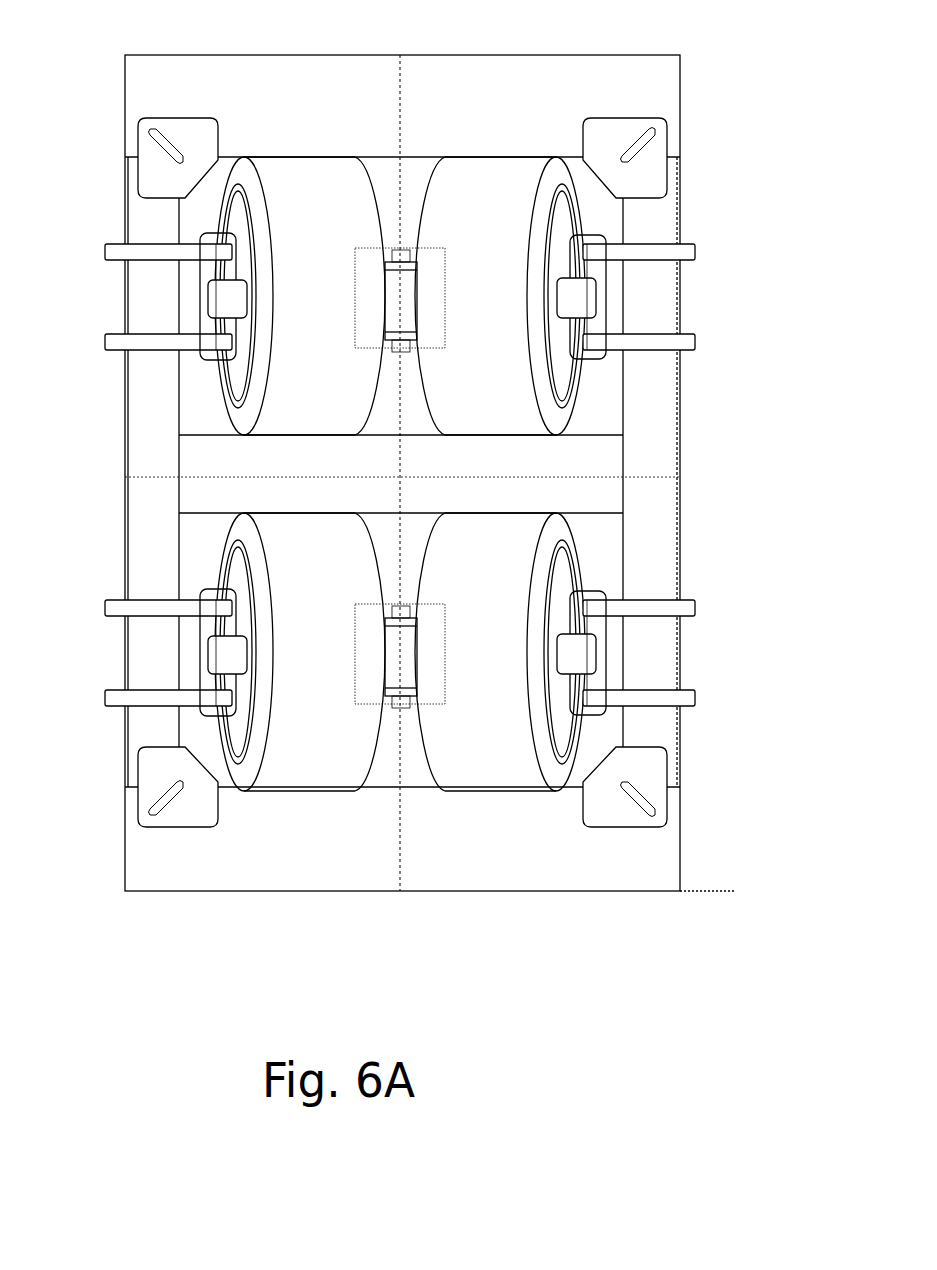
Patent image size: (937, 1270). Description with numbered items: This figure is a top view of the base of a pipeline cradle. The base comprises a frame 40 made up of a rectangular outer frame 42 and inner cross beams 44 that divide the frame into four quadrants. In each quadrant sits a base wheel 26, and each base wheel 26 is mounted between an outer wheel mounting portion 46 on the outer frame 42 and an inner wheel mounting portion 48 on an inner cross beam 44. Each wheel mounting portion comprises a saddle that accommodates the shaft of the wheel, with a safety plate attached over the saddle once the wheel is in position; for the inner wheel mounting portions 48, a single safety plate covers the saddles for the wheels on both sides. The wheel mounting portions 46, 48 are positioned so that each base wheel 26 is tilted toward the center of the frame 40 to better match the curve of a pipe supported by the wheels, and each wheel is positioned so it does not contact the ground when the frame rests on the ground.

The base wheel 26 is at (478, 755).
The frame 40 is at (278, 862).
The rectangular outer frame 42 is at (142, 378).
The inner cross beams 44 is at (418, 165).
The outer wheel mounting portion 46 is at (210, 268).
The inner wheel mounting portion 48 is at (393, 257).